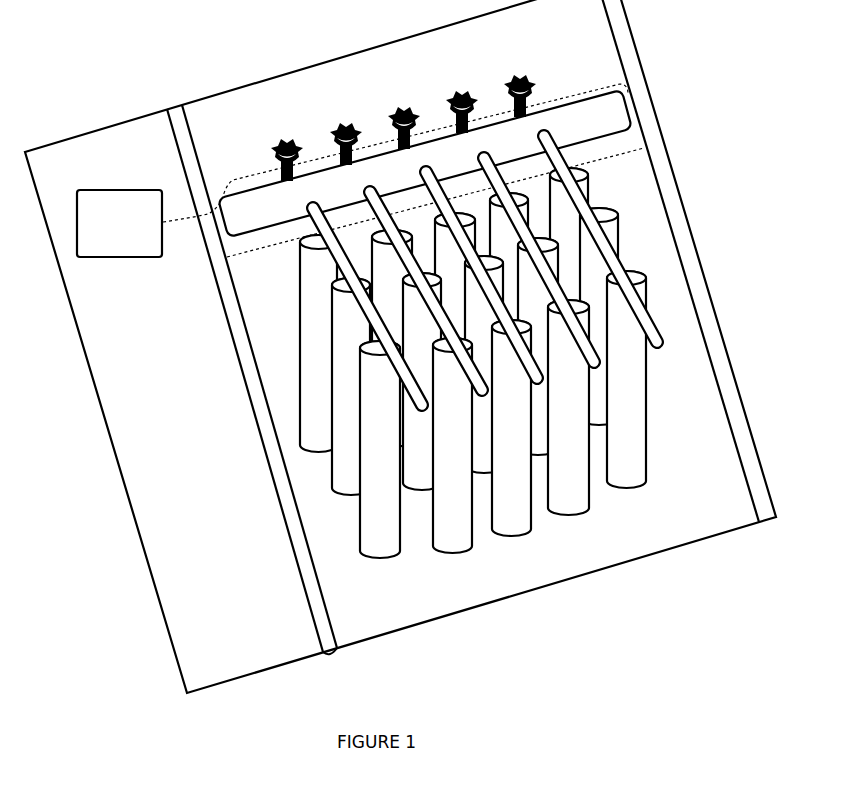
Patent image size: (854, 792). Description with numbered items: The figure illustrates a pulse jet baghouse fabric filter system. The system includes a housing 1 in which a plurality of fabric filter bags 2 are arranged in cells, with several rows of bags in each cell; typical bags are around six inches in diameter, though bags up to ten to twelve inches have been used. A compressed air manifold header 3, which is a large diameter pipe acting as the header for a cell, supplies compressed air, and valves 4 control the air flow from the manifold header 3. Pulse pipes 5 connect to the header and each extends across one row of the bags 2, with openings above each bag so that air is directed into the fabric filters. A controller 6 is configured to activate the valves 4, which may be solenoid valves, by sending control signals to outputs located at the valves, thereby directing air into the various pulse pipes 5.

The housing 1 is at (340, 654).
The fabric filter bags 2 is at (473, 363).
The compressed air manifold header 3 is at (425, 164).
The valves 4 is at (519, 77).
The pulse pipes 5 is at (600, 360).
The controller 6 is at (119, 223).